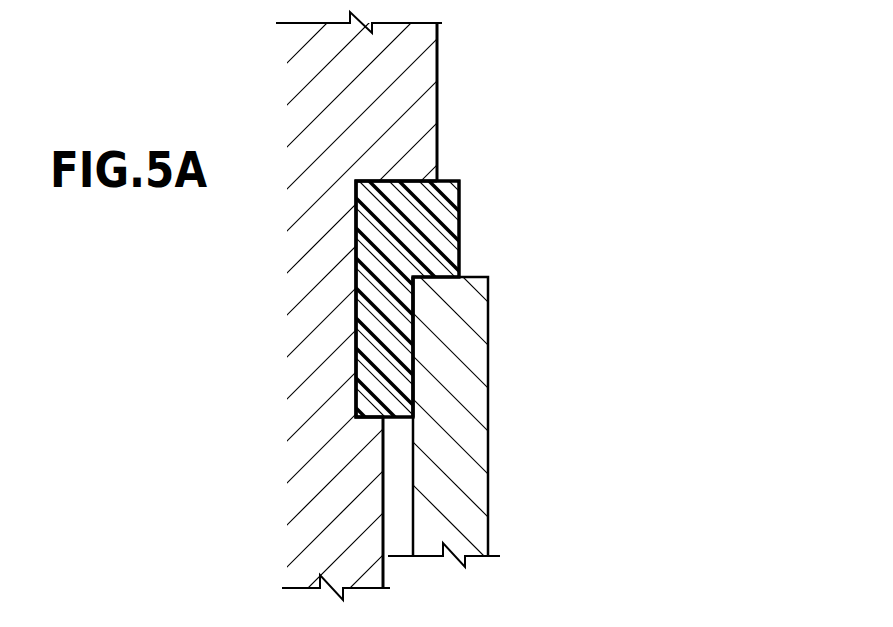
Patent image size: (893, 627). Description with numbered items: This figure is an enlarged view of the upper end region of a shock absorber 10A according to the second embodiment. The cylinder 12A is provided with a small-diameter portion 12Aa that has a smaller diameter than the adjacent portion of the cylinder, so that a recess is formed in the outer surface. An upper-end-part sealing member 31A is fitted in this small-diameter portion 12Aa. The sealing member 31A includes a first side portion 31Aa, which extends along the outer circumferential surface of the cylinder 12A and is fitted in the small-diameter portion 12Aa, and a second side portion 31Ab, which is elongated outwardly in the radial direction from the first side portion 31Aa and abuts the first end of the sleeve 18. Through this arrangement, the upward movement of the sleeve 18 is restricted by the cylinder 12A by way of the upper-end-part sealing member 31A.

The shock absorber 10A is at (673, 99).
The cylinder 12A is at (437, 88).
The small-diameter portion 12Aa is at (376, 332).
The upper-end-part sealing member 31A is at (619, 213).
The second side portion 31Ab is at (459, 218).
The first side portion 31Aa is at (413, 350).
The sleeve 18 is at (488, 460).